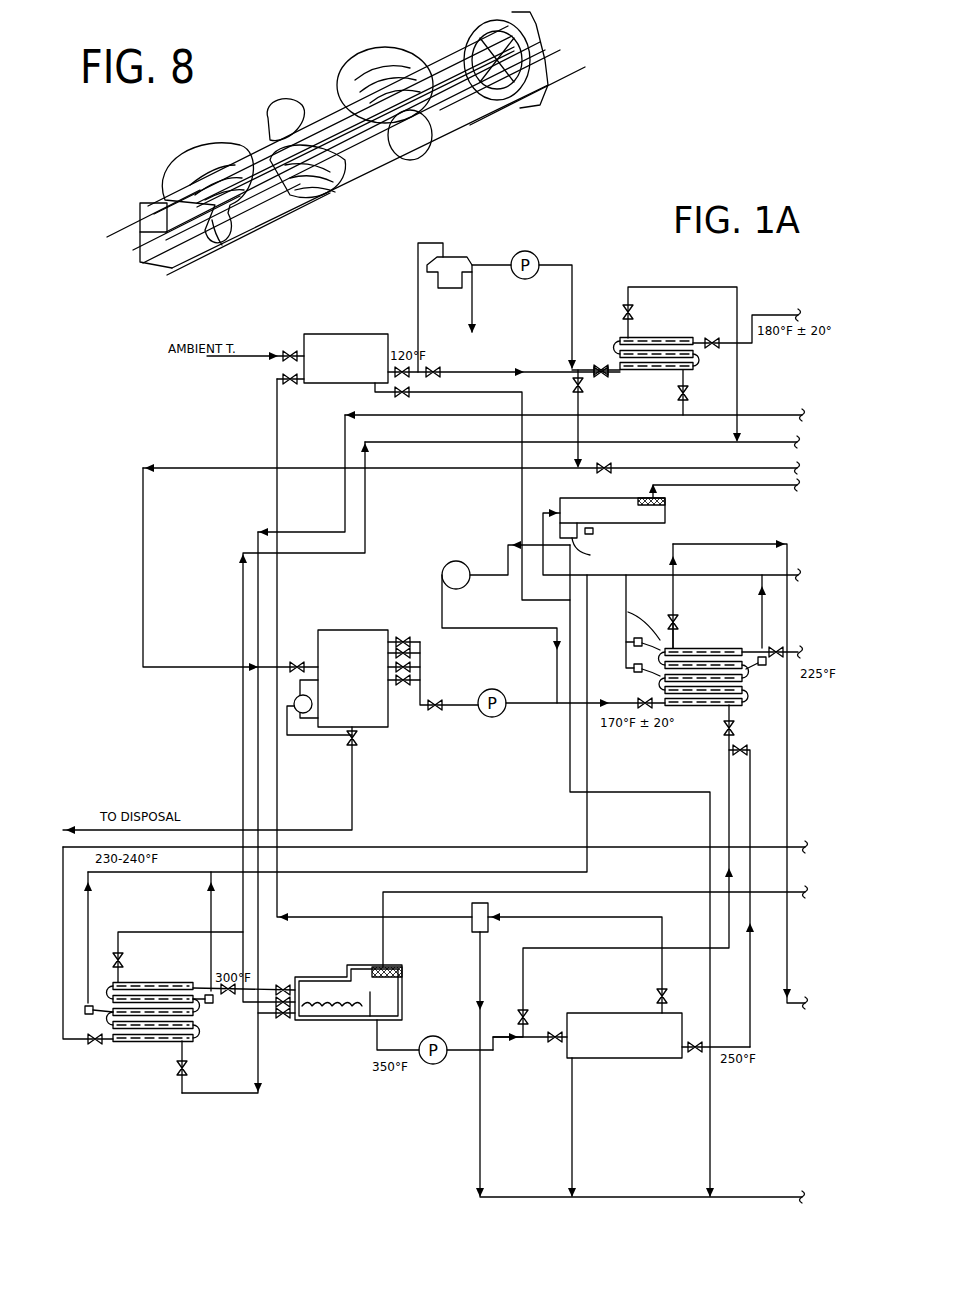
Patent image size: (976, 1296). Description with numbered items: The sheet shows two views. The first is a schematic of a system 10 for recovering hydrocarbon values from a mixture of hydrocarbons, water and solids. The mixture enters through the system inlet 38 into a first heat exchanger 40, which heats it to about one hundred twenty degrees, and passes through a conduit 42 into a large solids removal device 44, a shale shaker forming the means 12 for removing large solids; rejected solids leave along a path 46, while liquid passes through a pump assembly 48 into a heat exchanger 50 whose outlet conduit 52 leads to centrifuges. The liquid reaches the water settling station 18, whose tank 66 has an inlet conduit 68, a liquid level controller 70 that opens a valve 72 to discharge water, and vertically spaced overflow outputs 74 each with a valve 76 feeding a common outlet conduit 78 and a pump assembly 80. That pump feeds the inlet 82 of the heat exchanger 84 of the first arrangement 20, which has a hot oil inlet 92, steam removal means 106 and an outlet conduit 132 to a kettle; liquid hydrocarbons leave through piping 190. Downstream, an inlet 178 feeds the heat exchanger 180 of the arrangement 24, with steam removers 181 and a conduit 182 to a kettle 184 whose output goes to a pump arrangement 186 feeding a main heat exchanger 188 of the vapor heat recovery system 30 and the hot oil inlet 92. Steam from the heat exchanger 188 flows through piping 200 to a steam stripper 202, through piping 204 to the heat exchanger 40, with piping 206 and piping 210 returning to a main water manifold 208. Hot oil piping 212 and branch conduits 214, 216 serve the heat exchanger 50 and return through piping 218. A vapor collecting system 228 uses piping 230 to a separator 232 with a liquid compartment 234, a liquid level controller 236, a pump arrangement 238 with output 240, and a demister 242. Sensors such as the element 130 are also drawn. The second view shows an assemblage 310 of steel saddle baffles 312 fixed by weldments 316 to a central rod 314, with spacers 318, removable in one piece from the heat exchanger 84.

In FIG. 1A, the system 10 is at (150, 758).
In FIG. 1A, the means for removing large solids 12 is at (568, 249).
In FIG. 1A, the water settling station 18 is at (345, 615).
In FIG. 1A, the first heat exchanger-kettle reboiler arrangement 20 is at (745, 604).
In FIG. 1A, the heat exchanger-kettle reboiler arrangement 24 is at (280, 960).
In FIG. 1A, the vapor heat recovery system 30 is at (580, 998).
In FIG. 1A, the system inlet 38 is at (280, 352).
In FIG. 1A, the first heat exchanger 40 is at (372, 334).
In FIG. 1A, the conduit 42 is at (416, 296).
In FIG. 1A, the large solids removal device 44 is at (452, 256).
In FIG. 1A, the path 46 is at (473, 290).
In FIG. 1A, the pump assembly 48 is at (533, 252).
In FIG. 1A, the heat exchanger 50 is at (652, 326).
In FIG. 1A, the conduit 52 is at (780, 315).
In FIG. 1A, the tank 66 is at (330, 630).
In FIG. 1A, the inlet conduit 68 is at (282, 662).
In FIG. 1A, the liquid level gauge or controller 70 is at (295, 698).
In FIG. 1A, the valve 72 is at (357, 747).
In FIG. 1A, the overflow outputs 74 is at (393, 683).
In FIG. 1A, the valve 76 is at (400, 638).
In FIG. 1A, the common outlet conduit 78 is at (421, 690).
In FIG. 1A, the pump assembly 80 is at (505, 675).
In FIG. 1A, the inlet 82 is at (530, 707).
In FIG. 1A, the heat exchanger 84 is at (742, 640).
In FIG. 1A, the hot oil inlet 92 is at (727, 715).
In FIG. 1A, the steam removal means 106 is at (653, 620).
In FIG. 1A, the temperature sensors 130 is at (636, 672).
In FIG. 1A, the conduit 132 is at (766, 657).
In FIG. 1A, the inlet 178 is at (104, 1044).
In FIG. 1A, the heat exchanger 180 is at (135, 960).
In FIG. 1A, the steam removers 181 is at (85, 1010).
In FIG. 1A, the conduit 182 is at (205, 983).
In FIG. 1A, the kettle 184 is at (315, 972).
In FIG. 1A, the pump arrangement 186 is at (419, 1037).
In FIG. 1A, the main heat exchanger 188 is at (640, 1012).
In FIG. 1A, the piping 190 is at (762, 544).
In FIG. 1A, the piping 200 is at (597, 917).
In FIG. 1A, the steam stripper 202 is at (472, 925).
In FIG. 1A, the piping 204 is at (278, 797).
In FIG. 1A, the piping 206 is at (520, 404).
In FIG. 1A, the main water manifold 208 is at (775, 1197).
In FIG. 1A, the piping 210 is at (482, 1093).
In FIG. 1A, the piping 212 is at (740, 413).
In FIG. 1A, the branch conduit 214 is at (683, 410).
In FIG. 1A, the branch conduit 216 is at (738, 378).
In FIG. 1A, the piping 218 is at (797, 442).
In FIG. 1A, the vapor collecting system 228 is at (745, 582).
In FIG. 1A, the piping 230 is at (543, 560).
In FIG. 1A, the receiver or separator 232 is at (620, 498).
In FIG. 1A, the liquid compartment 234 is at (605, 551).
In FIG. 1A, the liquid level controller 236 is at (593, 531).
In FIG. 1A, the pump arrangement 238 is at (443, 563).
In FIG. 1A, the output 240 is at (463, 628).
In FIG. 1A, the demister 242 is at (658, 505).
In FIG. 8, the assemblage of baffles 310 is at (385, 38).
In FIG. 8, the baffles 312 is at (267, 110).
In FIG. 8, the central rod 314 is at (363, 125).
In FIG. 8, the weldments 316 is at (370, 97).
In FIG. 8, the spacers 318 is at (490, 23).